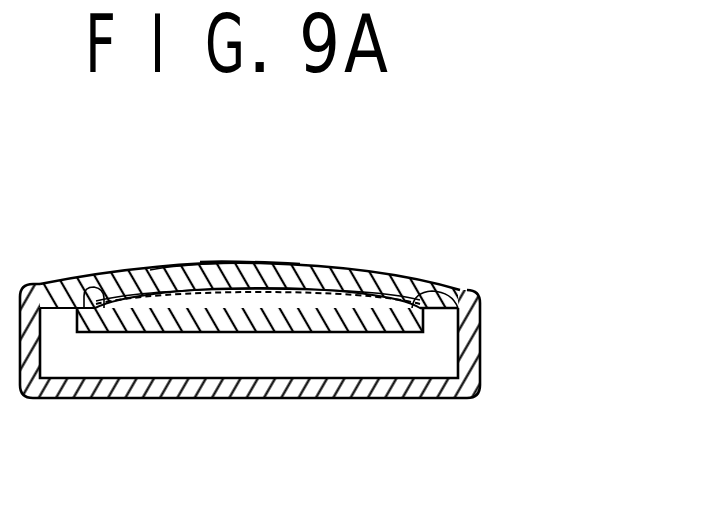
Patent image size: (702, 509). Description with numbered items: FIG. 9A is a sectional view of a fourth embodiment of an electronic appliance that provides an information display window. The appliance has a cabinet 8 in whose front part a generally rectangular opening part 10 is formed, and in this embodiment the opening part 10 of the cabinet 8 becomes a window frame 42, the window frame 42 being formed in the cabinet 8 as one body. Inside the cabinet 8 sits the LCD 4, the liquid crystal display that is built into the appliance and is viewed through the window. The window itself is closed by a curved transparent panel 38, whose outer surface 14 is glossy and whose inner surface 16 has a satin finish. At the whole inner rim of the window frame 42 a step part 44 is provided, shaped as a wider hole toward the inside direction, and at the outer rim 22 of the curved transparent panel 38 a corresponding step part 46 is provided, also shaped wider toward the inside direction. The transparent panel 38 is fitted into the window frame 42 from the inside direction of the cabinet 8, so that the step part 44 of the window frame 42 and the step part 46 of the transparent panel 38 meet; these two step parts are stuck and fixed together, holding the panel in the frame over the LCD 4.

The LCD 4 is at (188, 322).
The cabinet 8 is at (473, 358).
The opening part 10 is at (128, 300).
The outer surface 14 is at (313, 256).
The inner surface 16 is at (246, 293).
The outer rim 22 is at (428, 256).
The transparent panel 38 is at (184, 273).
The window frame 42 is at (77, 246).
The step part 44 is at (478, 311).
The step part 46 is at (369, 294).